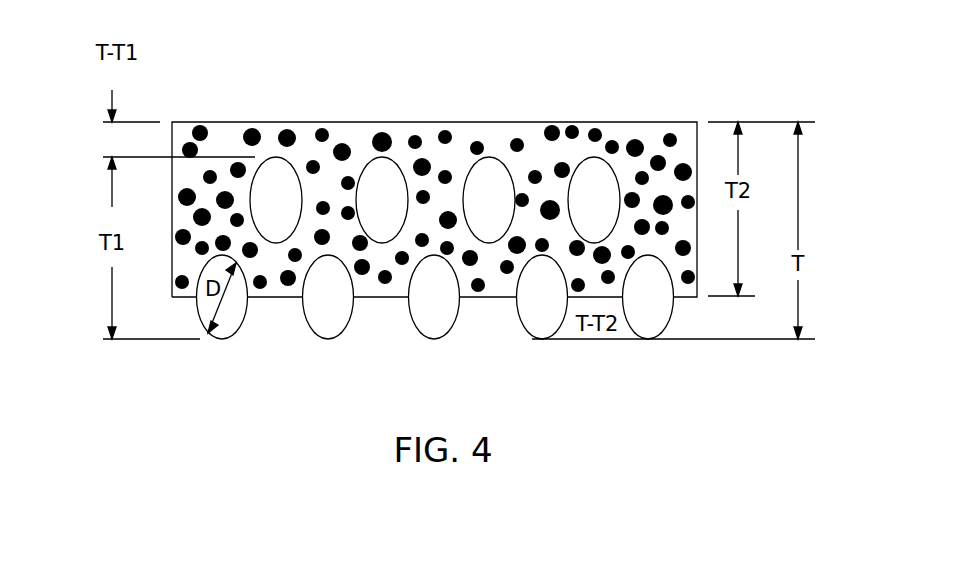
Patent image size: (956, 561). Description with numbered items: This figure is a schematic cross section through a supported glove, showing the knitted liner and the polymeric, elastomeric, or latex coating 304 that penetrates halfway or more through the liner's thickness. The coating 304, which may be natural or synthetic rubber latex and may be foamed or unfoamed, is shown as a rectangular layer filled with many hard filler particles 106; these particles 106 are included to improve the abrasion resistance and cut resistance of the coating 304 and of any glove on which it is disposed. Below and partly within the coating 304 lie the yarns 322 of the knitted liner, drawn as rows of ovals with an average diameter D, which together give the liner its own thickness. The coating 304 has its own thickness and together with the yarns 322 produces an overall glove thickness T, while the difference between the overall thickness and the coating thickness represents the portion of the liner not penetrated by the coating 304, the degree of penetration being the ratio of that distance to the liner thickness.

The hard filler particles 106 is at (197, 127).
The polymeric, elastomeric, or latex coating 304 is at (495, 123).
The yarns 322 is at (242, 332).